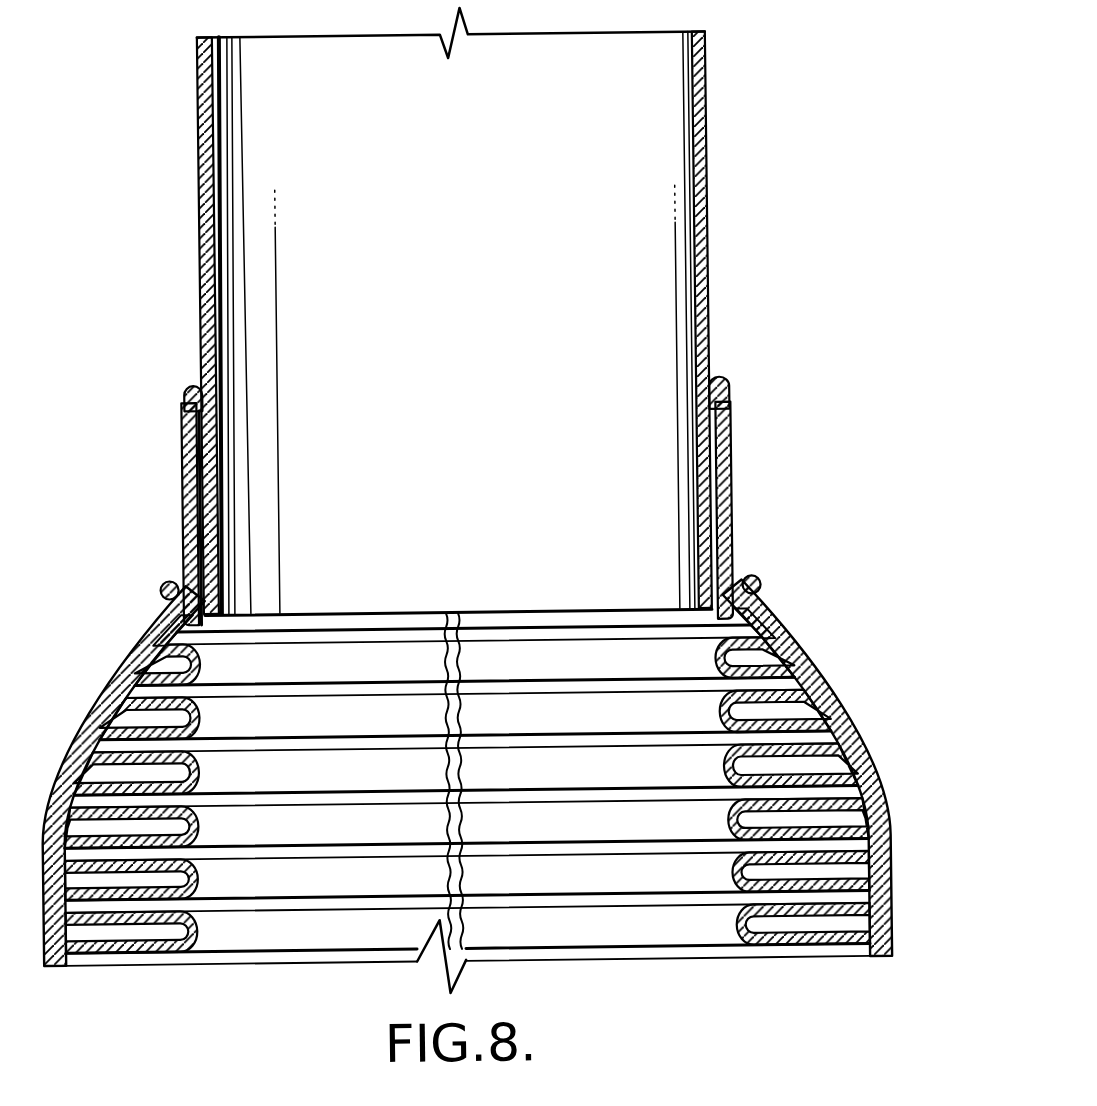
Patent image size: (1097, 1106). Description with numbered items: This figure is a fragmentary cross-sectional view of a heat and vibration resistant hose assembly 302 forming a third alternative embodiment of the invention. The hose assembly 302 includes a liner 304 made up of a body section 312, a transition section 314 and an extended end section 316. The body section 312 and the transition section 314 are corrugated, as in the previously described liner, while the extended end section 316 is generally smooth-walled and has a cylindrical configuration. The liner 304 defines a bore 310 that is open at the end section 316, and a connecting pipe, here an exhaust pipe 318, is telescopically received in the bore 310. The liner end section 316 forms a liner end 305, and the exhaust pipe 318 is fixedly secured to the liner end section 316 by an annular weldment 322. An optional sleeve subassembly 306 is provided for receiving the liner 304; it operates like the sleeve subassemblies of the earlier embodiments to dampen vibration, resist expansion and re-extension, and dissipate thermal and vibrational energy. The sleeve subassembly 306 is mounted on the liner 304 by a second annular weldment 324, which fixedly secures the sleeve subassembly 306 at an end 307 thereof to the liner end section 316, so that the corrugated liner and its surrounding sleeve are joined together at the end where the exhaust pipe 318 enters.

The heat and vibration resistant hose assembly 302 is at (438, 310).
The liner 304 is at (864, 961).
The liner end 305 is at (733, 413).
The sleeve subassembly 306 is at (40, 966).
The end of sleeve subassembly 307 is at (749, 595).
The bore 310 is at (224, 464).
The body section 312 is at (196, 924).
The transition section 314 is at (201, 658).
The extended end section 316 is at (228, 502).
The exhaust pipe 318 is at (712, 35).
The annular weldment 322 is at (723, 383).
The annular weldment 324 is at (739, 574).